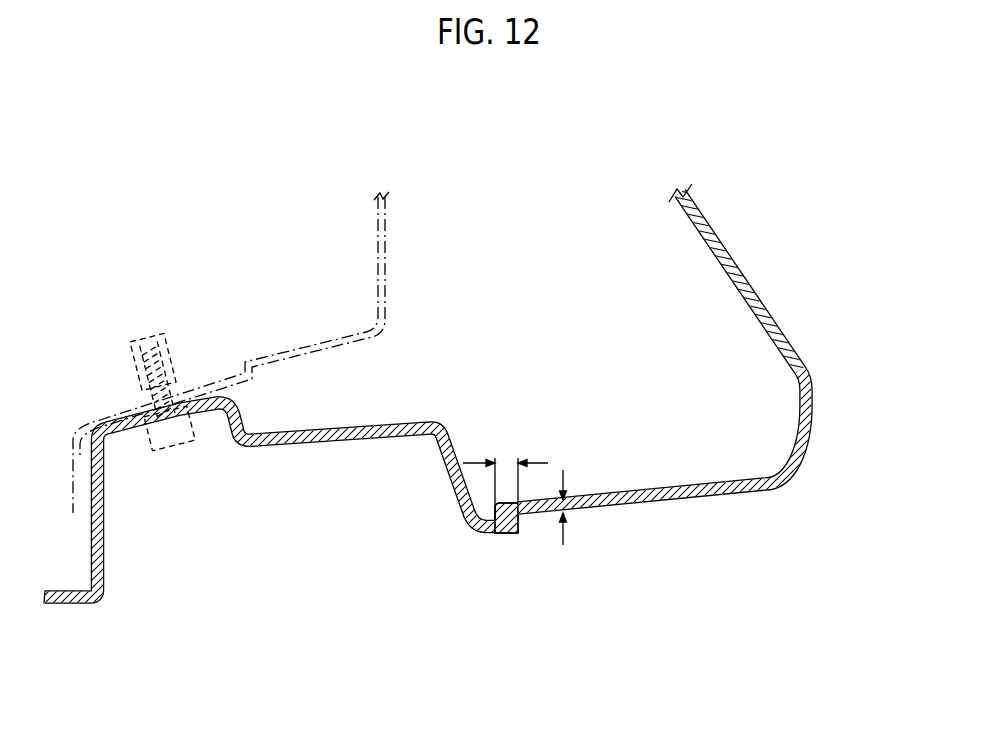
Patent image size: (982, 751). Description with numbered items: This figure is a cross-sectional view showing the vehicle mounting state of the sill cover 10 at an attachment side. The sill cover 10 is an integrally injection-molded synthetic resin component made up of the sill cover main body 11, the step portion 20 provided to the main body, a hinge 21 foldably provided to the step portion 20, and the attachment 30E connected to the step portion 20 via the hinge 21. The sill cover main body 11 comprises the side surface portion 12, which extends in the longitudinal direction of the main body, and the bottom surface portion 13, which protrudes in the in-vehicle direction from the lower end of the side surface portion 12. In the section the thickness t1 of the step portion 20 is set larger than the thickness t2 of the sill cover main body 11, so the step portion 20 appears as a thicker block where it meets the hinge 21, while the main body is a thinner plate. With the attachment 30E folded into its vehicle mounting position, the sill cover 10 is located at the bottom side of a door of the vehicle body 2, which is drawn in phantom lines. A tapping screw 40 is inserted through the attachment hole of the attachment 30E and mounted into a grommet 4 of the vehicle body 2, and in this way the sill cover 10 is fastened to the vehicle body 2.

The vehicle body 2 is at (297, 347).
The grommet 4 is at (177, 337).
The tapping screw 40 is at (176, 446).
The attachment 30E is at (330, 442).
The hinge 21 is at (488, 534).
The step portion 20 is at (513, 534).
The thickness of step portion t1 is at (506, 460).
The thickness of sill cover main body t2 is at (573, 497).
The sill cover 10 is at (783, 344).
The sill cover main body 11 is at (793, 420).
The side surface portion 12 is at (819, 369).
The bottom surface portion 13 is at (690, 499).